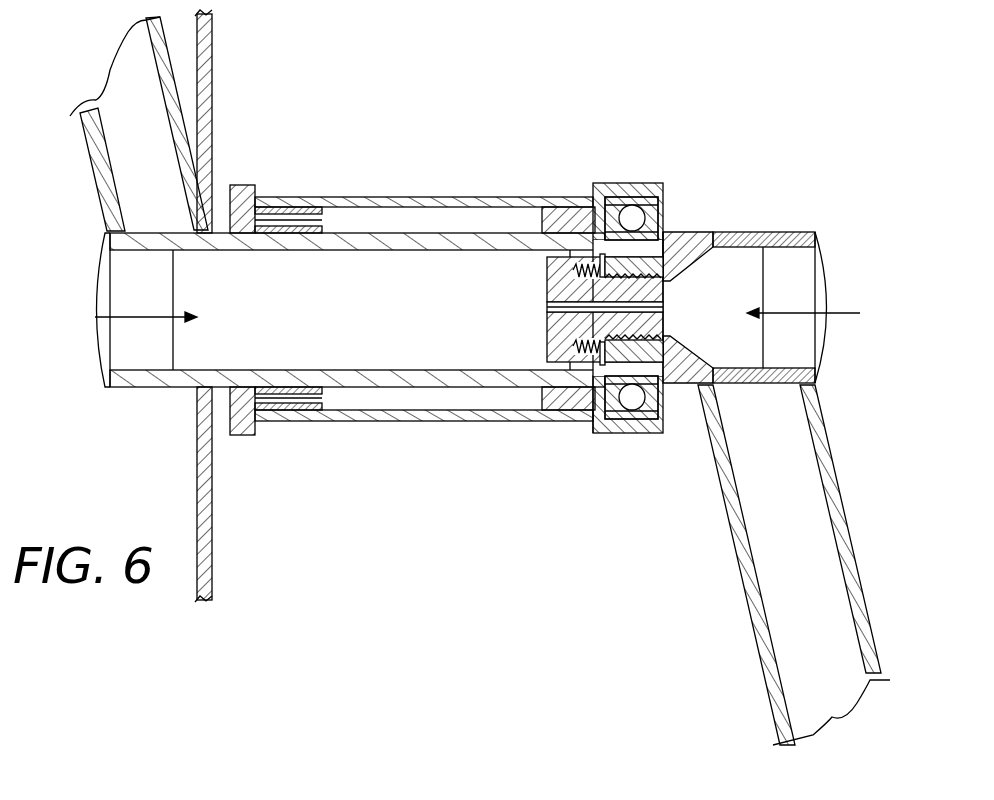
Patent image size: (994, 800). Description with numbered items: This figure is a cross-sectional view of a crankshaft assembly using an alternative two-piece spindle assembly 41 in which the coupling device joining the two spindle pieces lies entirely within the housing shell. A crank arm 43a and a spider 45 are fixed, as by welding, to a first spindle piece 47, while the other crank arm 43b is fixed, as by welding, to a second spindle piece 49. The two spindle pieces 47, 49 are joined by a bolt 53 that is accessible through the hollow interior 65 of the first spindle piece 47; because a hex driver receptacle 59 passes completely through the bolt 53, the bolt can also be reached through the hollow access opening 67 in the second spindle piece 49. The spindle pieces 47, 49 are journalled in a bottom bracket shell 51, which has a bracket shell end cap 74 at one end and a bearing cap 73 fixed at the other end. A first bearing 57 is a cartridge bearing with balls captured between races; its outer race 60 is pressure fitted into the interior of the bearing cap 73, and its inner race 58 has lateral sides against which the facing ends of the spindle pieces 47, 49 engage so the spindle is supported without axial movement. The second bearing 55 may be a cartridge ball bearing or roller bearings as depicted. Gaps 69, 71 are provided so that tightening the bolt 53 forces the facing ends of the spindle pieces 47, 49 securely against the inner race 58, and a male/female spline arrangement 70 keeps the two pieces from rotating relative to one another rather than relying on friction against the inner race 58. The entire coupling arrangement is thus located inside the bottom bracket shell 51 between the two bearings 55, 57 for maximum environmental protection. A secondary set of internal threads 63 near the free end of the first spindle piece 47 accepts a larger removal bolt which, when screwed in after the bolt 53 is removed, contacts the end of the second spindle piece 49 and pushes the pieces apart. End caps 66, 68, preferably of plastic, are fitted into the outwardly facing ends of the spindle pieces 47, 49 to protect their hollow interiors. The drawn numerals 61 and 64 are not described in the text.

The two-piece spindle assembly 41 is at (485, 125).
The crank arm 43a is at (177, 93).
The crank arm 43b is at (733, 547).
The spider 45 is at (217, 112).
The first spindle piece 47 is at (138, 387).
The second spindle piece 49 is at (770, 232).
The bottom bracket shell 51 is at (355, 423).
The bolt 53 is at (547, 333).
The second bearing 55 is at (277, 213).
The first bearing 57 is at (672, 212).
The inner race 58 is at (662, 236).
The hex driver receptacle 59 is at (547, 302).
The outer race 60 is at (603, 196).
The central rod 61 is at (663, 318).
The internal threads 63 is at (548, 260).
The lower spring 64 is at (547, 357).
The hollow interior 65 is at (95, 317).
The end cap 66 is at (103, 333).
The hollow access opening 67 is at (845, 313).
The end cap 68 is at (822, 350).
The gap 69 is at (668, 242).
The male/female spline arrangement 70 is at (663, 272).
The gap 71 is at (660, 342).
The bearing cap 73 is at (630, 185).
The bracket shell end cap 74 is at (240, 185).